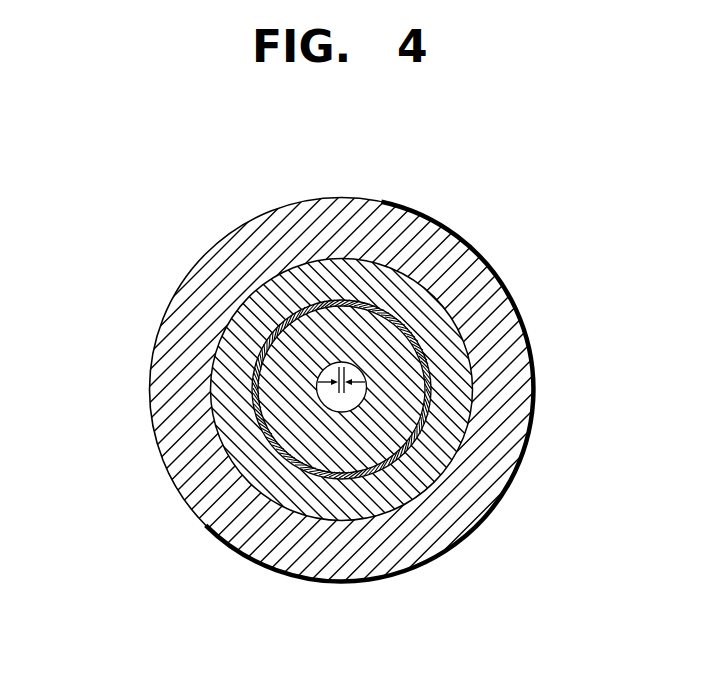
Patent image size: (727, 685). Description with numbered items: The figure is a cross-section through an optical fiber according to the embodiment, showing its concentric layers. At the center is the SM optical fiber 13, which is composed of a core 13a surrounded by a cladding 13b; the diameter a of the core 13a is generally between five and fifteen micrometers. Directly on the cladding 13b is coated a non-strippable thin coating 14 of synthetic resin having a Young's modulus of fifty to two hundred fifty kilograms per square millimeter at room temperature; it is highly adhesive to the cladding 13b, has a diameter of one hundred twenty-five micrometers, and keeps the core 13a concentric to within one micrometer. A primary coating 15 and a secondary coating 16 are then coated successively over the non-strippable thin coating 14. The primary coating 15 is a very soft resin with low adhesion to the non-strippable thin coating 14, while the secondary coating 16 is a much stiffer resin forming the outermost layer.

The SM optical fiber 13 is at (386, 492).
The core 13a is at (355, 410).
The cladding 13b is at (398, 423).
The non-strippable thin coating 14 is at (240, 330).
The primary coating 15 is at (213, 396).
The secondary coating 16 is at (178, 460).
The core diameter a is at (342, 387).